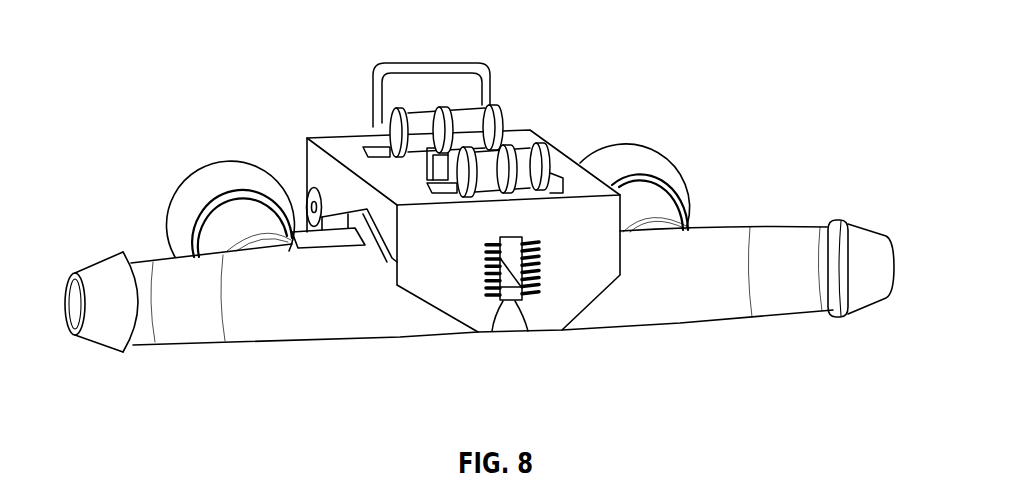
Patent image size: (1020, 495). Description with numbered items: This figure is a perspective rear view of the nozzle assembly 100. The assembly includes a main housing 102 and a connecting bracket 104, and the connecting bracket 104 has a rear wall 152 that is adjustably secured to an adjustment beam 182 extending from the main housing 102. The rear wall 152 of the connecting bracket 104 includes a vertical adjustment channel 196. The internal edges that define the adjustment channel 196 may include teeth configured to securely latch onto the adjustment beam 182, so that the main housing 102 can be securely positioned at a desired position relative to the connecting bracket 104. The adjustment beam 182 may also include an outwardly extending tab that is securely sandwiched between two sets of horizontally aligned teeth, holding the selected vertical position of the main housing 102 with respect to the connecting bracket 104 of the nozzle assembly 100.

The nozzle assembly 100 is at (142, 70).
The main housing 102 is at (777, 222).
The connecting bracket 104 is at (556, 134).
The rear wall 152 is at (598, 233).
The adjustment beam 182 is at (510, 301).
The vertical adjustment channel 196 is at (510, 243).